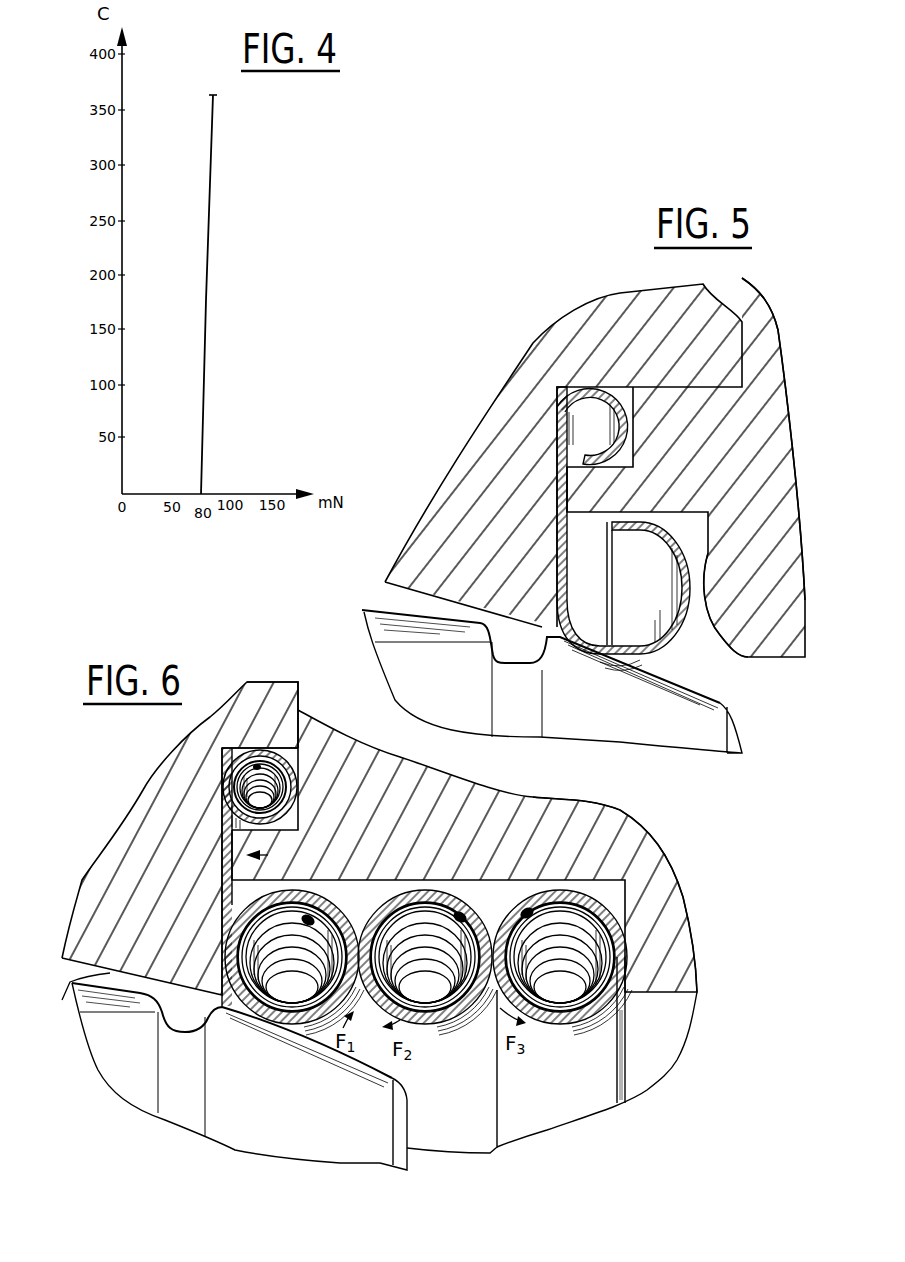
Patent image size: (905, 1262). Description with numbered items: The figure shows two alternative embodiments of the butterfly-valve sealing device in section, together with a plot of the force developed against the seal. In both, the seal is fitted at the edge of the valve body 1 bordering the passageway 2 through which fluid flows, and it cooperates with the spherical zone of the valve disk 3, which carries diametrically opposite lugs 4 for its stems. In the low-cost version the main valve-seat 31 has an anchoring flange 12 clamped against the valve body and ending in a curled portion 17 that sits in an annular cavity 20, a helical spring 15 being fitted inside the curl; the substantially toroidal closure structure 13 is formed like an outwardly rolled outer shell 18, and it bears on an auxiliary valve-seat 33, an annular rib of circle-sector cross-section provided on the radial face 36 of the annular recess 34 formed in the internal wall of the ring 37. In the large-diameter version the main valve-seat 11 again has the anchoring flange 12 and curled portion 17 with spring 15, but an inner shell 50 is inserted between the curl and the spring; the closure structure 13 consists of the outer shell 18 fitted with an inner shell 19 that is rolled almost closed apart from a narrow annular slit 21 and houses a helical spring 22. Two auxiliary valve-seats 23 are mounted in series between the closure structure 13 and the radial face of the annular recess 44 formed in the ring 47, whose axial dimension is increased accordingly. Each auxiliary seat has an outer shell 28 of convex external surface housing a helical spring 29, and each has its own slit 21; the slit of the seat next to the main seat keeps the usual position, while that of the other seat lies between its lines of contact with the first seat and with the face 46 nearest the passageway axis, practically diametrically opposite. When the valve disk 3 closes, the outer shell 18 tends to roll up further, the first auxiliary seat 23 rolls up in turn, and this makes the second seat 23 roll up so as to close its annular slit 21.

In FIG. 5, the valve body 1 is at (605, 327).
In FIG. 6, the valve body 1 is at (180, 838).
In FIG. 6, the passageway 2 is at (70, 983).
In FIG. 5, the valve disk 3 is at (705, 727).
In FIG. 6, the valve disk 3 is at (266, 1152).
In FIG. 6, the lugs 4 is at (125, 1063).
In FIG. 6, the main valve-seat 11 is at (300, 840).
In FIG. 5, the anchoring flange 12 is at (557, 413).
In FIG. 6, the anchoring flange 12 is at (200, 842).
In FIG. 5, the closure structure 13 is at (535, 568).
In FIG. 6, the closure structure 13 is at (203, 946).
In FIG. 6, the helical spring 15 is at (236, 789).
In FIG. 6, the curled portion 17 is at (248, 748).
In FIG. 5, the outer shell 18 is at (692, 660).
In FIG. 6, the outer shell 18 is at (310, 1023).
In FIG. 6, the inner shell 19 is at (283, 1017).
In FIG. 6, the annular cavity 20 is at (300, 750).
In FIG. 6, the annular slit 21 is at (383, 903).
In FIG. 6, the helical spring 22 is at (237, 1012).
In FIG. 6, the auxiliary valve-seat 23 is at (454, 1135).
In FIG. 6, the outer shell 28 is at (437, 1030).
In FIG. 6, the helical spring 29 is at (457, 907).
In FIG. 5, the main valve-seat 31 is at (757, 415).
In FIG. 5, the auxiliary valve-seat 33 is at (692, 592).
In FIG. 5, the annular recess 34 is at (615, 496).
In FIG. 5, the radial face 36 is at (700, 537).
In FIG. 5, the ring 37 is at (783, 403).
In FIG. 6, the annular recess 44 is at (512, 815).
In FIG. 6, the face 46 is at (626, 907).
In FIG. 6, the ring 47 is at (663, 937).
In FIG. 6, the inner shell 50 is at (273, 746).